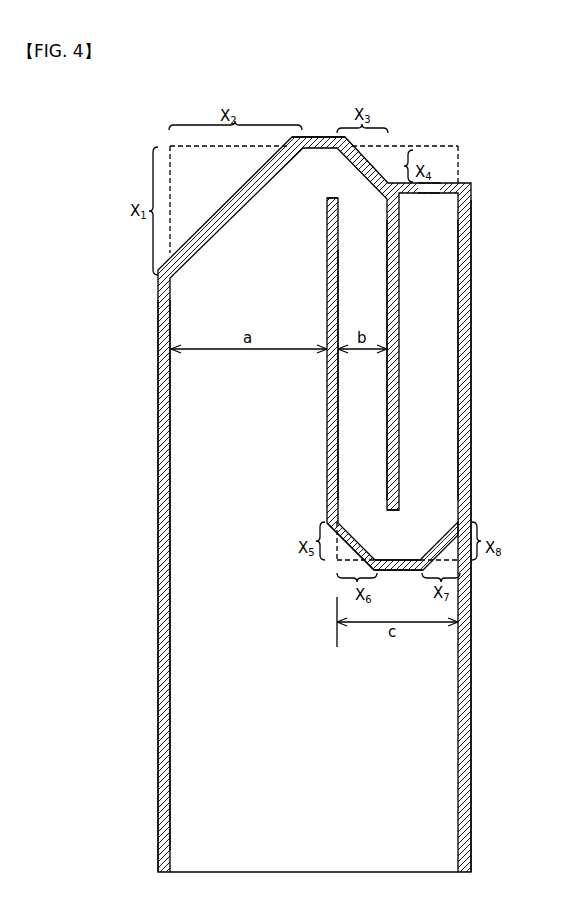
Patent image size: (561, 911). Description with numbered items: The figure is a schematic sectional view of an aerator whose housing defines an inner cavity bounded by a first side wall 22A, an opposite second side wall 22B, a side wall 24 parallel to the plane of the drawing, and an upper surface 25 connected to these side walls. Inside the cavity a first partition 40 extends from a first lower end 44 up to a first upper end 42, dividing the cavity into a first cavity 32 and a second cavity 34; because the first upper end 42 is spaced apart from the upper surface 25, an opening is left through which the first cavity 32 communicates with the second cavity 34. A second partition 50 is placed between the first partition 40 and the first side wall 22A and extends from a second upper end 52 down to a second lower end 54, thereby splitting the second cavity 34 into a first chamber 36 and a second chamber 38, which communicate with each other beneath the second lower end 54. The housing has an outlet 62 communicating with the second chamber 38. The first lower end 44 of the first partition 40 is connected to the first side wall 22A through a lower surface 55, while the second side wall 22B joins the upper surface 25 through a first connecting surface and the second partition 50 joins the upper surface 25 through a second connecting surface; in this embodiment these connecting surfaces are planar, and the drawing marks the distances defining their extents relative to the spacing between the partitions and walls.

The first side wall 22A is at (471, 411).
The second side wall 22B is at (158, 433).
The side wall 24 is at (207, 697).
The upper surface 25 is at (309, 136).
The first cavity 32 is at (233, 481).
The second cavity 34 is at (408, 565).
The first chamber 36 is at (367, 277).
The second chamber 38 is at (430, 307).
The first partition 40 is at (327, 378).
The first upper end 42 is at (327, 198).
The first lower end 44 is at (350, 543).
The second partition 50 is at (388, 398).
The second upper end 52 is at (400, 207).
The second lower end 54 is at (387, 511).
The lower surface 55 is at (398, 538).
The outlet 62 is at (437, 188).